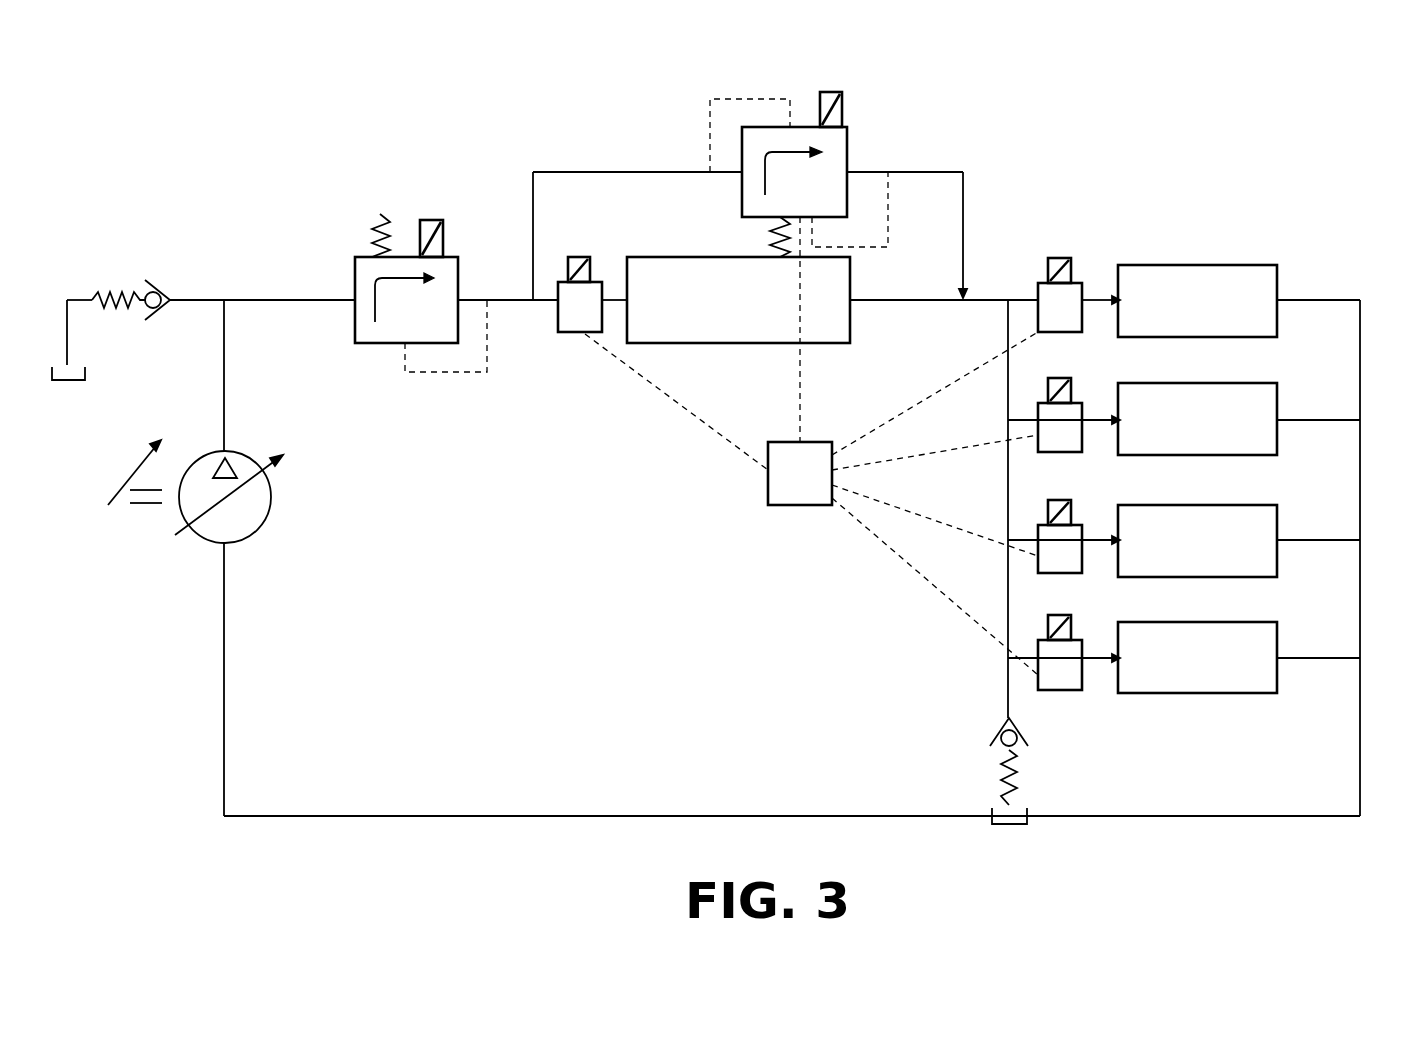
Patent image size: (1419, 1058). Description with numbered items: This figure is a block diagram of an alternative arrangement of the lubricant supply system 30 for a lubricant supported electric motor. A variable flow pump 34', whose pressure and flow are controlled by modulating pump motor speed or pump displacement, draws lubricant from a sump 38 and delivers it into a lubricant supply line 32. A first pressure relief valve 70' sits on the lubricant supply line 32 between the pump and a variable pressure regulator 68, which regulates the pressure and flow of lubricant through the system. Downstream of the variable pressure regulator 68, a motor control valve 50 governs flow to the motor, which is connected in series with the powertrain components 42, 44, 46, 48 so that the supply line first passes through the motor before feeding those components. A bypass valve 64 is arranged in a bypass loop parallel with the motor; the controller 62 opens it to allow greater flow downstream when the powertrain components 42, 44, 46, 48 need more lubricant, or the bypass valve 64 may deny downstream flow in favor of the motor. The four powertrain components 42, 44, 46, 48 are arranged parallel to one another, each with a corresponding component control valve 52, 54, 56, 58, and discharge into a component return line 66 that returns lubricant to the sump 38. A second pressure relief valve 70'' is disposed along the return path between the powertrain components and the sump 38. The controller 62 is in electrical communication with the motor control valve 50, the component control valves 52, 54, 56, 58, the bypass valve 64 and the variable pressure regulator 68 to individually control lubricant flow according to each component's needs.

The lubricant supply system 30 is at (1108, 110).
The lubricant supply line 32 is at (224, 370).
The variable flow pump 34' is at (237, 491).
The sump 38 is at (1010, 826).
The powertrain component 42 is at (1228, 265).
The powertrain component 44 is at (1250, 383).
The powertrain component 46 is at (1250, 505).
The powertrain component 48 is at (1250, 622).
The motor control valve 50 is at (595, 282).
The component control valve 52 is at (1073, 280).
The component control valve 54 is at (1073, 400).
The component control valve 56 is at (1073, 522).
The component control valve 58 is at (1073, 637).
The controller 62 is at (808, 506).
The bypass valve 64 is at (800, 127).
The component return line 66 is at (1360, 587).
The variable pressure regulator 68 is at (402, 257).
The first pressure relief valve 70' is at (111, 295).
The second pressure relief valve 70'' is at (1071, 761).